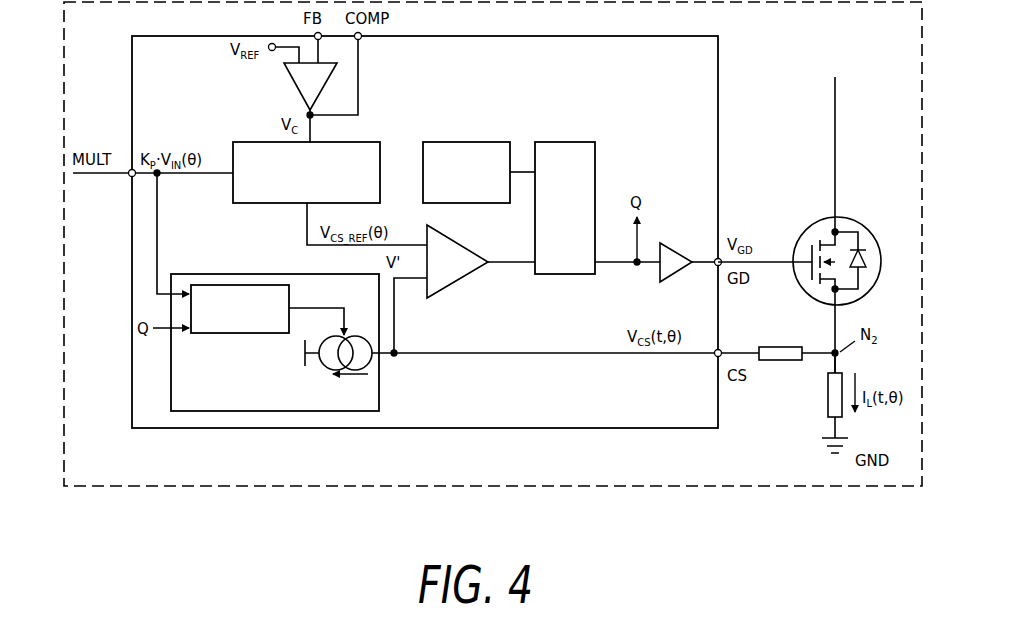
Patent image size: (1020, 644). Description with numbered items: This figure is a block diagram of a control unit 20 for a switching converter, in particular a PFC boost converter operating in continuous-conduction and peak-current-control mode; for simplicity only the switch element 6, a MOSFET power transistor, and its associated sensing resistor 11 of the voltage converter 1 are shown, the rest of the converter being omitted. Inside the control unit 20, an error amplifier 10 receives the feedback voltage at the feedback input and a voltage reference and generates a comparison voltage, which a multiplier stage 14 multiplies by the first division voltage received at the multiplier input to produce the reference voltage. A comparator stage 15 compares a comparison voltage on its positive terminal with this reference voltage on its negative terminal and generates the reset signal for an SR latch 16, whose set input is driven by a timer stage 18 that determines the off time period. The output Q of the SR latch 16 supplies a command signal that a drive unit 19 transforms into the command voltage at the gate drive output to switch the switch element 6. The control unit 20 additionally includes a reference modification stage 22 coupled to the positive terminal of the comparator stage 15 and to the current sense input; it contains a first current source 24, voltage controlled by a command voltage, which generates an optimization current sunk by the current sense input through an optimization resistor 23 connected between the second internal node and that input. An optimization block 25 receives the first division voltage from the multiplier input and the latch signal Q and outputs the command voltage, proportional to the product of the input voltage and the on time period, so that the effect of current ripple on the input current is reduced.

The voltage converter 1 is at (160, 492).
The switch element 6 is at (828, 238).
The error amplifier 10 is at (307, 87).
The sensing resistor 11 is at (828, 413).
The multiplier stage 14 is at (383, 139).
The comparator stage 15 is at (468, 278).
The SR latch 16 is at (596, 175).
The timer stage 18 is at (472, 142).
The drive unit 19 is at (673, 253).
The control unit 20 is at (129, 335).
The reference modification stage 22 is at (382, 394).
The optimization resistor 23 is at (780, 362).
The first current source 24 is at (368, 366).
The optimization block 25 is at (217, 334).